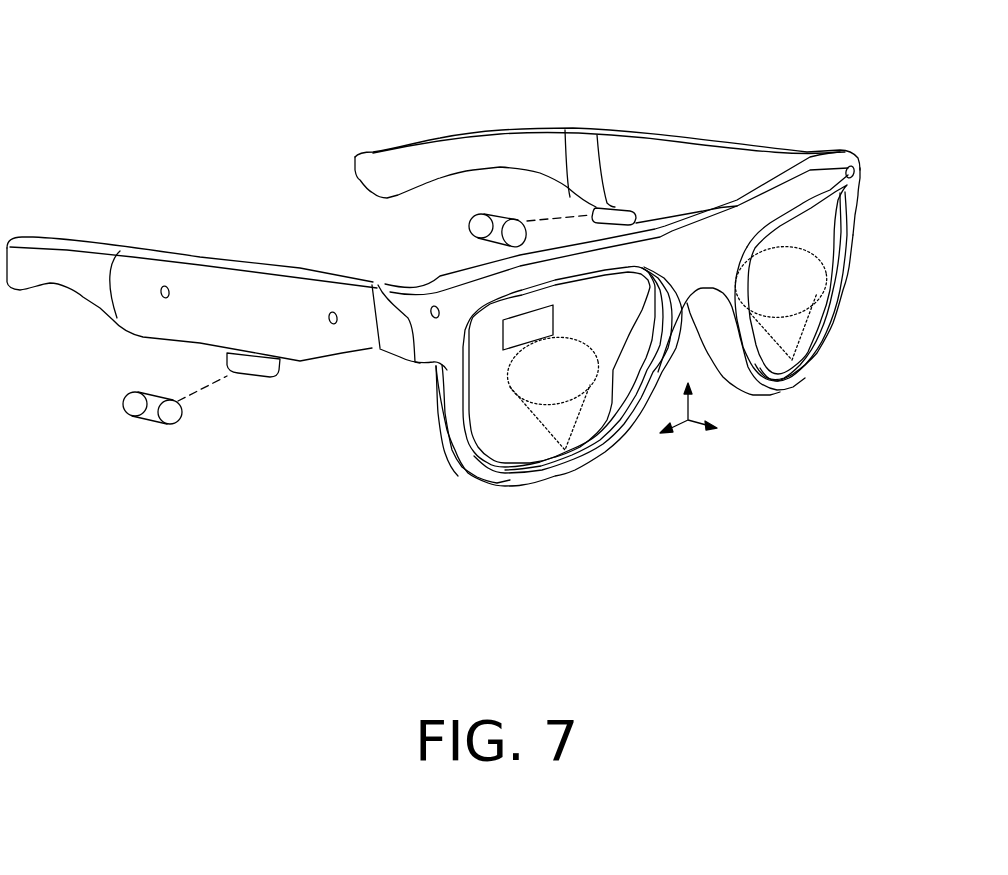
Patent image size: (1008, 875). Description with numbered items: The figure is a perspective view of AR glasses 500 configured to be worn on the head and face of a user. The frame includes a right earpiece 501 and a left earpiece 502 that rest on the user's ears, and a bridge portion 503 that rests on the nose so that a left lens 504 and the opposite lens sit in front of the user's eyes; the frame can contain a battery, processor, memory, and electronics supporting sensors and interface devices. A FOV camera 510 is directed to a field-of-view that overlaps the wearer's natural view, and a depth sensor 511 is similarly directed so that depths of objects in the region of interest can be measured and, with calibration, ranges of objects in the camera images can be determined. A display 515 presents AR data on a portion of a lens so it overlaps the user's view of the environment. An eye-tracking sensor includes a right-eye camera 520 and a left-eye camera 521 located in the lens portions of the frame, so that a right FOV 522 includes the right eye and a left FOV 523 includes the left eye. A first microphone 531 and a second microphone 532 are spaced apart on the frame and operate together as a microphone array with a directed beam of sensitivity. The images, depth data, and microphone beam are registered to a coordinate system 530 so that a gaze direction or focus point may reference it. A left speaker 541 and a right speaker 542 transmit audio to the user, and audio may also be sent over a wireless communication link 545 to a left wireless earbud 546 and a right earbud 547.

The AR glasses 500 is at (64, 104).
The right earpiece 501 is at (230, 267).
The left earpiece 502 is at (707, 143).
The bridge portion 503 is at (690, 217).
The left lens 504 is at (760, 238).
The FOV camera 510 is at (431, 308).
The depth sensor 511 is at (853, 153).
The display 515 is at (507, 343).
The right-eye camera 520 is at (565, 452).
The left-eye camera 521 is at (796, 380).
The right FOV 522 is at (510, 385).
The left FOV 523 is at (802, 248).
The coordinate system 530 is at (687, 422).
The first microphone 531 is at (333, 312).
The second microphone 532 is at (165, 286).
The left speaker 541 is at (613, 203).
The right speaker 542 is at (258, 380).
The wireless communication link 545 is at (202, 387).
The left wireless earbud 546 is at (500, 216).
The right earbud 547 is at (155, 424).